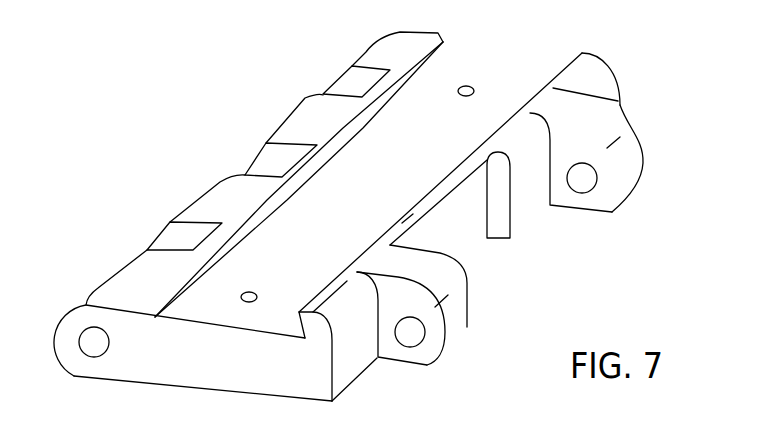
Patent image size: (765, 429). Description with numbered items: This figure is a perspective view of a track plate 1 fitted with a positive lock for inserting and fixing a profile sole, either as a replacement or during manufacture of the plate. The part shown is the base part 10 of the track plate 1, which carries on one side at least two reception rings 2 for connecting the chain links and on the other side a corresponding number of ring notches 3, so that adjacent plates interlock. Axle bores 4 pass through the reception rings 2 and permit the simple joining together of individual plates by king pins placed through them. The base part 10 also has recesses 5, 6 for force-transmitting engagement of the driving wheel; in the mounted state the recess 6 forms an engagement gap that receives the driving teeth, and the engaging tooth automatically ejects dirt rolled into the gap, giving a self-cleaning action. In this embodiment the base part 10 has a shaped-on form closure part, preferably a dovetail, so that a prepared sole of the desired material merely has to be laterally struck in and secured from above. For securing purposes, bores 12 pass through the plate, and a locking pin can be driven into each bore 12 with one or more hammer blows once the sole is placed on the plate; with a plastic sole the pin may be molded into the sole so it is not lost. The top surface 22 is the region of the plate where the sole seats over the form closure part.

The track plate 1 is at (246, 102).
The base part 10 is at (150, 163).
The reception ring 2 is at (625, 176).
The ring notch 3 is at (171, 242).
The axle bore 4 is at (92, 345).
The recess 5 is at (472, 233).
The recess 6 is at (258, 166).
The bore 12 is at (250, 296).
The top surface 22 is at (501, 93).